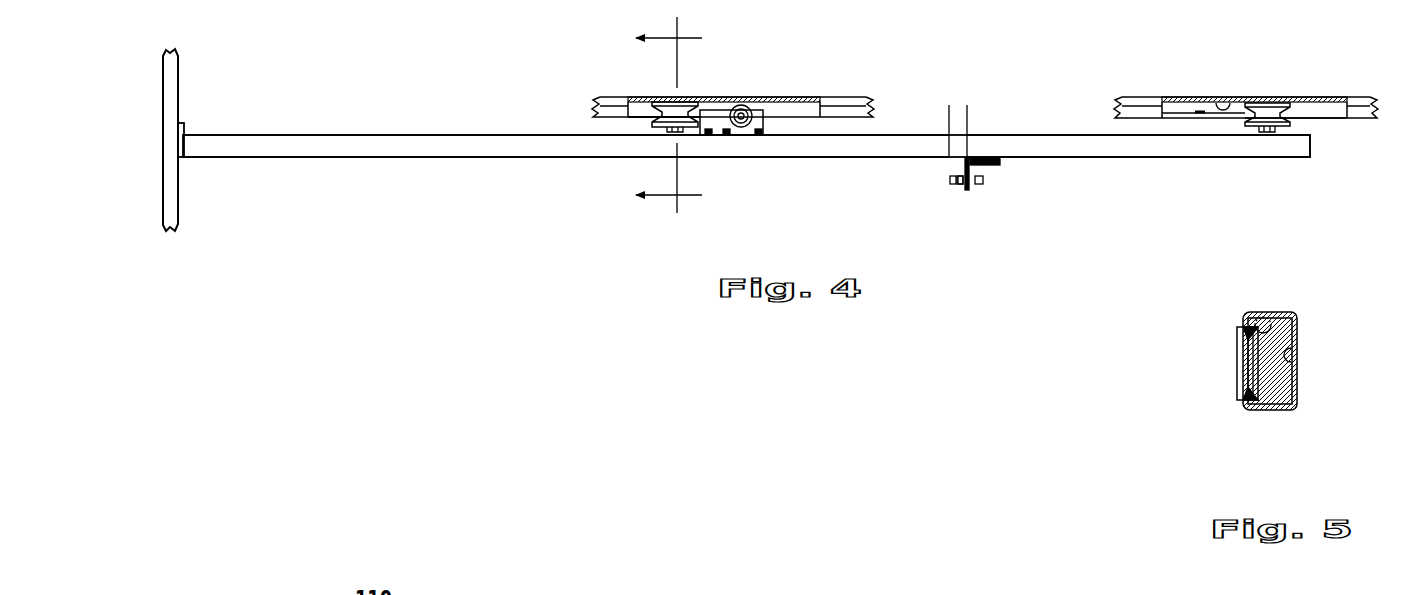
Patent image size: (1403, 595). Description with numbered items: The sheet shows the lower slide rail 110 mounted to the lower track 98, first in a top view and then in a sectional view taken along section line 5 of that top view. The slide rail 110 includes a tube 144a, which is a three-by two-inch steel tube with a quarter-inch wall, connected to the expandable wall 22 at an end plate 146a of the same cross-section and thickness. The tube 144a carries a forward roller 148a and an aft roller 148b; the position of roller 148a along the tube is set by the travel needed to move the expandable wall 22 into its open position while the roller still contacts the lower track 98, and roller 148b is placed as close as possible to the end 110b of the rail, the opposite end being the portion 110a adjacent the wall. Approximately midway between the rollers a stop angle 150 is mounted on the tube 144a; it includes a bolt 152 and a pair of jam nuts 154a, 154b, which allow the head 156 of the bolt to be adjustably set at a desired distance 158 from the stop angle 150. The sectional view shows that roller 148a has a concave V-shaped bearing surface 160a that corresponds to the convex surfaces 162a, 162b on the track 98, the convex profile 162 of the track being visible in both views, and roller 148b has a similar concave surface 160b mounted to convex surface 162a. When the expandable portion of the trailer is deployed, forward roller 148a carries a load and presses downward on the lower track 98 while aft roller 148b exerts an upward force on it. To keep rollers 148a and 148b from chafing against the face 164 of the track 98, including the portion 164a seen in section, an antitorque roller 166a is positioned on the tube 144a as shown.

In FIG. 4, the expandable wall 22 is at (179, 58).
In FIG. 4, the end plate 146a is at (183, 125).
In FIG. 4, the tube 144a is at (298, 135).
In FIG. 4, the first beam section 110a is at (186, 157).
In FIG. 4, the end 110b is at (1312, 148).
In FIG. 4, the lower slide rail 110 is at (524, 176).
In FIG. 4, the section line 5- 5 is at (669, 119).
In FIG. 4, the lower track 98 is at (866, 97).
In FIG. 5, the lower track 98 is at (1296, 388).
In FIG. 4, the roller 148a is at (684, 105).
In FIG. 5, the roller 148a is at (1237, 365).
In FIG. 4, the roller 148b is at (1270, 103).
In FIG. 4, the face 164 is at (767, 110).
In FIG. 5, the guide wheel recess 164a is at (1296, 352).
In FIG. 4, the lower flange of rail 162 is at (655, 122).
In FIG. 5, the convex surface 162a is at (1240, 392).
In FIG. 5, the convex surface 162b is at (1270, 318).
In FIG. 5, the concave V-shaped bearing surface 160a is at (1250, 330).
In FIG. 4, the concave surface 160b is at (1242, 120).
In FIG. 4, the antitorque roller 166a is at (758, 119).
In FIG. 4, the distance 158 is at (925, 118).
In FIG. 4, the head 156 is at (950, 180).
In FIG. 4, the bolt 152 is at (985, 180).
In FIG. 4, the stop angle 150 is at (968, 190).
In FIG. 4, the jam nut 154a is at (962, 186).
In FIG. 4, the jam nut 154b is at (982, 186).